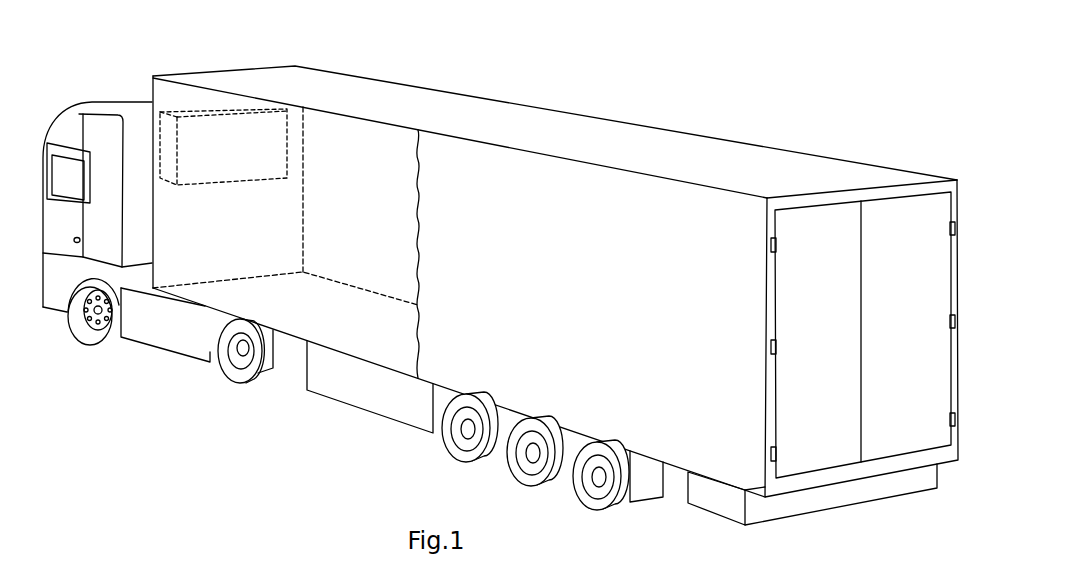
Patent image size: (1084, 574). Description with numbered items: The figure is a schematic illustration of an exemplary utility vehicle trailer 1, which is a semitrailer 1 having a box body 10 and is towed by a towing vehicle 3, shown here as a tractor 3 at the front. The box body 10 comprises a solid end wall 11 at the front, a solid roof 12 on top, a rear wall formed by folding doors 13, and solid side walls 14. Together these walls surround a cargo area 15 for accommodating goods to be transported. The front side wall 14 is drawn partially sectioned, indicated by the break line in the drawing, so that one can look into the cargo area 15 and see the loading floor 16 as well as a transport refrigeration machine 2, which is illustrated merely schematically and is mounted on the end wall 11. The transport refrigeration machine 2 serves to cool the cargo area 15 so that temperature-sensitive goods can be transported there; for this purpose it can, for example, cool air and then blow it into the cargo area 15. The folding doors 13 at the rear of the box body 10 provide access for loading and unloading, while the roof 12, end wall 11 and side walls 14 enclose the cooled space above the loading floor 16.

The utility vehicle trailer 1 is at (650, 70).
The transport refrigeration machine 2 is at (225, 164).
The towing vehicle 3 is at (120, 107).
The box body 10 is at (714, 150).
The end wall 11 is at (226, 234).
The roof 12 is at (807, 167).
The folding doors 13 is at (813, 336).
The side walls 14 is at (594, 306).
The cargo area 15 is at (354, 142).
The loading floor 16 is at (303, 312).